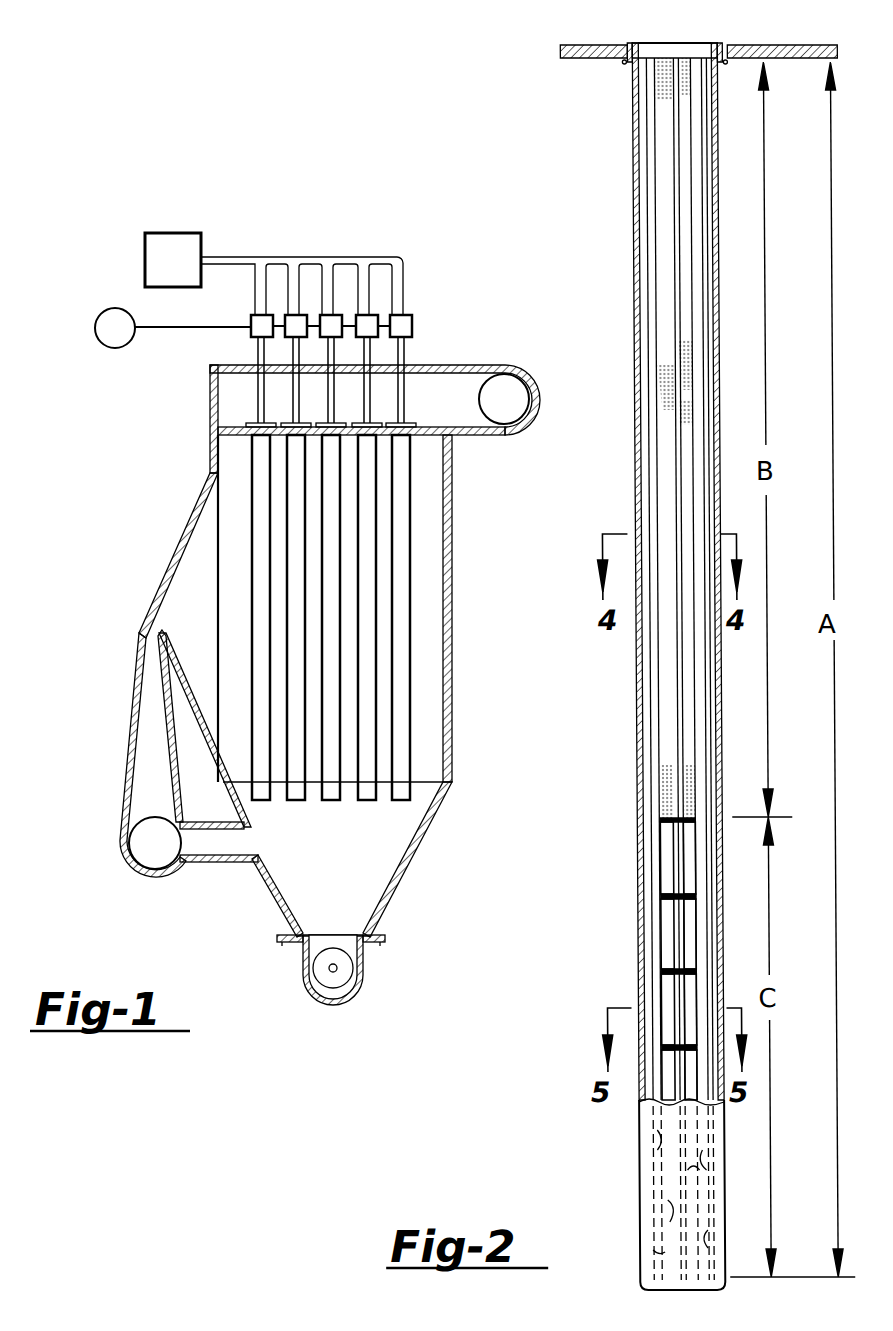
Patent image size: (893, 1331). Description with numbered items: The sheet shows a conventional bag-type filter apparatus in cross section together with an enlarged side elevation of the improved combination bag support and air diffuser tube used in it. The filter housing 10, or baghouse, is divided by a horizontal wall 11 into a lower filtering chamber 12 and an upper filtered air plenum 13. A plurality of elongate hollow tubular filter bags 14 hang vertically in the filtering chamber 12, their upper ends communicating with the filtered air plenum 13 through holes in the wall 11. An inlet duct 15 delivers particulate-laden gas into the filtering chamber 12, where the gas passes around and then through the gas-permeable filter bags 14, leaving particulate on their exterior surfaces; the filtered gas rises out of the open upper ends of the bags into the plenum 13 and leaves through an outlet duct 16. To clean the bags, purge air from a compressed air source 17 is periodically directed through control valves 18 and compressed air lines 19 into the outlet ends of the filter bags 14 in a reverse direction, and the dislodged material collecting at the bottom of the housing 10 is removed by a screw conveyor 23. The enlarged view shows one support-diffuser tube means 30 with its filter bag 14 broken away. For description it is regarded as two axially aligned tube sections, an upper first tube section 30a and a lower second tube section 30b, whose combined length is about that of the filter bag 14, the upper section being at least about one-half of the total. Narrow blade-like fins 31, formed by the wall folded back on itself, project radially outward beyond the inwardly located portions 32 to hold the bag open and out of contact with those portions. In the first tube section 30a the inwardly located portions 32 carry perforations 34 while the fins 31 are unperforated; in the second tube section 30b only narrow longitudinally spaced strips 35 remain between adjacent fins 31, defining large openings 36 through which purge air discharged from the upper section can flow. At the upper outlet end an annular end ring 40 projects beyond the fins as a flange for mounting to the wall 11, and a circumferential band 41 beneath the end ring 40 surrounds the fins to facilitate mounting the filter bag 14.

In FIG. 1, the filter housing 10 is at (450, 600).
In FIG. 1, the horizontal wall 11 is at (242, 440).
In FIG. 2, the horizontal wall 11 is at (586, 45).
In FIG. 1, the filtering chamber 12 is at (428, 541).
In FIG. 1, the filtered air plenum 13 is at (232, 400).
In FIG. 1, the filter bag 14 is at (292, 596).
In FIG. 2, the filter bag 14 is at (633, 1158).
In FIG. 1, the inlet duct 15 is at (143, 771).
In FIG. 1, the outlet duct 16 is at (505, 393).
In FIG. 1, the compressed air source 17 is at (150, 262).
In FIG. 1, the control valves 18 is at (296, 316).
In FIG. 1, the compressed air lines 19 is at (372, 357).
In FIG. 1, the screw conveyor 23 is at (350, 978).
In FIG. 2, the support-diffuser tube means 30 is at (612, 212).
In FIG. 2, the first tube section 30a is at (632, 353).
In FIG. 2, the second tube section 30b is at (632, 972).
In FIG. 2, the fins 31 is at (672, 272).
In FIG. 2, the inwardly located portions 32 is at (665, 162).
In FIG. 2, the perforations 34 is at (681, 72).
In FIG. 2, the strips 35 is at (688, 968).
In FIG. 2, the openings 36 is at (667, 921).
In FIG. 1, the annular end ring 40 is at (376, 423).
In FIG. 2, the annular end ring 40 is at (713, 52).
In FIG. 2, the circumferential band 41 is at (626, 65).